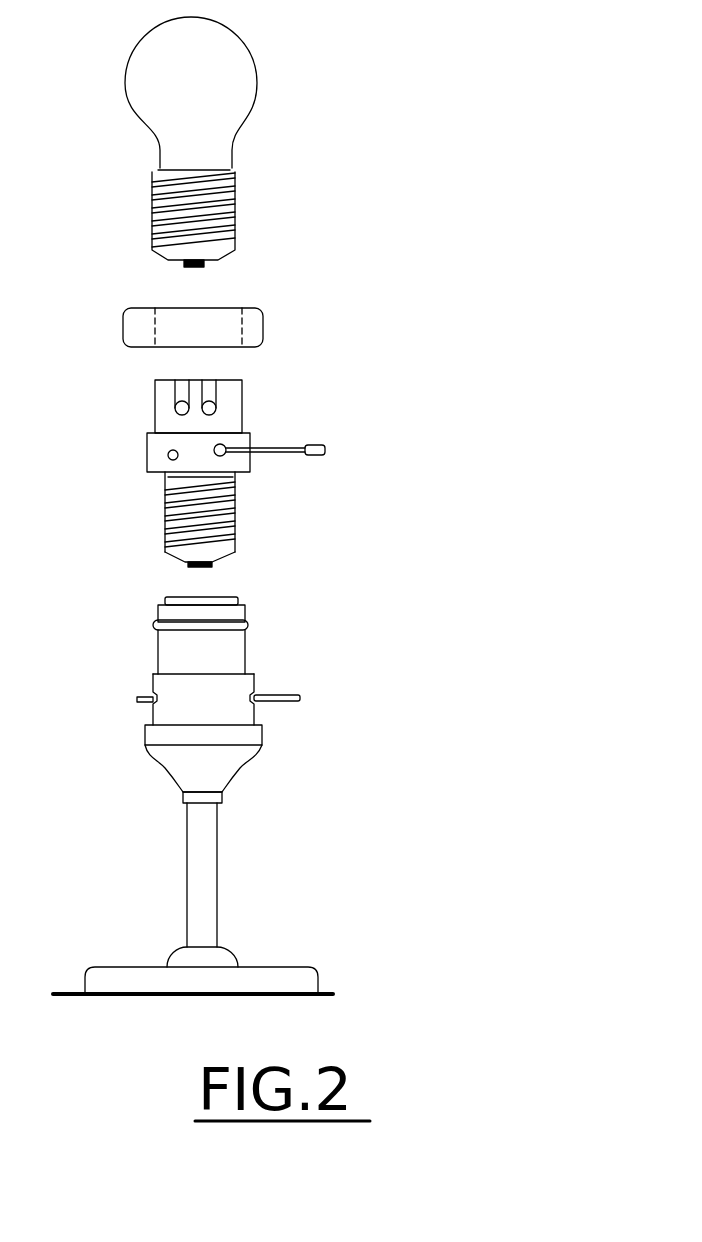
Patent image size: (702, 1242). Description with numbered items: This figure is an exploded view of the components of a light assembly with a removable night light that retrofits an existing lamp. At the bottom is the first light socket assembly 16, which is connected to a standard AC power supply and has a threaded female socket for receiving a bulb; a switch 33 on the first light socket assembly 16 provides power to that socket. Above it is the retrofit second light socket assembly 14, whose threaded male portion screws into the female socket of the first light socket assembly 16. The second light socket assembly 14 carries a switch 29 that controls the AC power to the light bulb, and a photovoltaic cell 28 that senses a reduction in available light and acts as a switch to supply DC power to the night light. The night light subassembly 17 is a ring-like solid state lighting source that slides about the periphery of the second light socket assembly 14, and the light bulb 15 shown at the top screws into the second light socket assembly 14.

The light bulb 15 is at (135, 98).
The night light subassembly 17 is at (267, 325).
The second light socket assembly 14 is at (154, 410).
The photovoltaic cell 28 is at (168, 455).
The switch 29 is at (329, 449).
The first light socket assembly 16 is at (218, 645).
The switch 33 is at (289, 706).